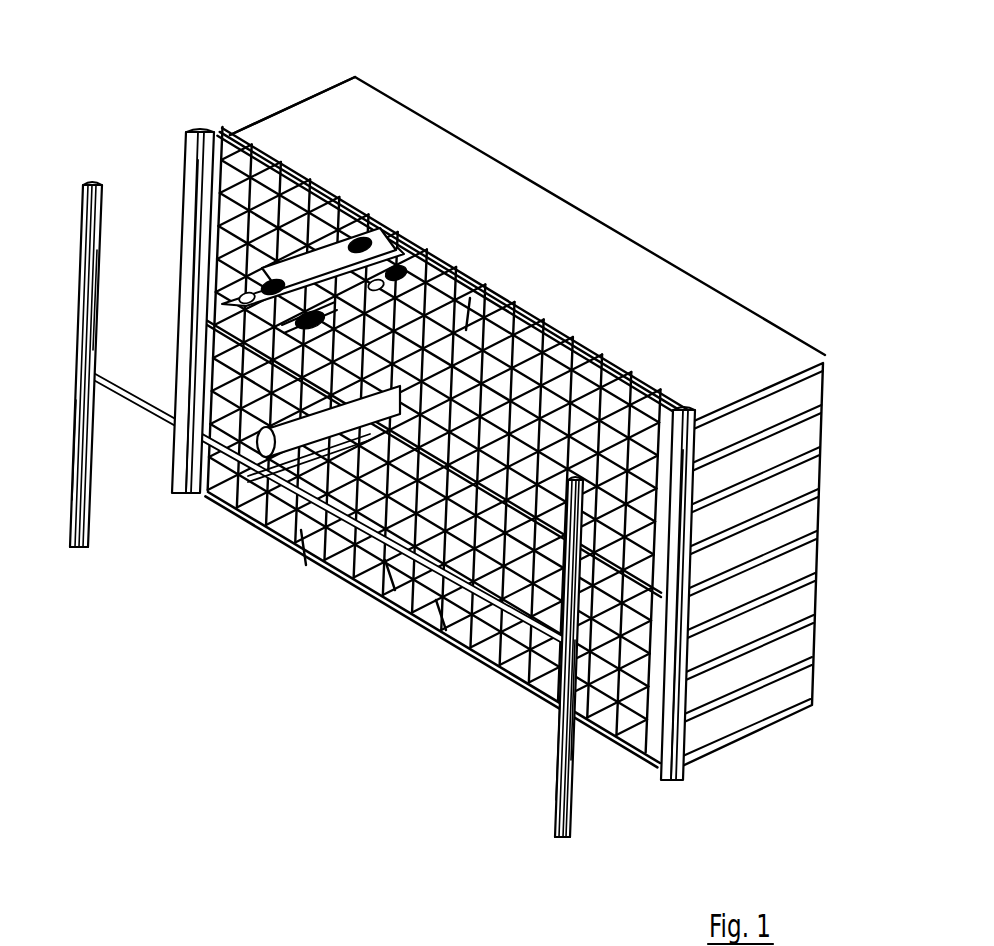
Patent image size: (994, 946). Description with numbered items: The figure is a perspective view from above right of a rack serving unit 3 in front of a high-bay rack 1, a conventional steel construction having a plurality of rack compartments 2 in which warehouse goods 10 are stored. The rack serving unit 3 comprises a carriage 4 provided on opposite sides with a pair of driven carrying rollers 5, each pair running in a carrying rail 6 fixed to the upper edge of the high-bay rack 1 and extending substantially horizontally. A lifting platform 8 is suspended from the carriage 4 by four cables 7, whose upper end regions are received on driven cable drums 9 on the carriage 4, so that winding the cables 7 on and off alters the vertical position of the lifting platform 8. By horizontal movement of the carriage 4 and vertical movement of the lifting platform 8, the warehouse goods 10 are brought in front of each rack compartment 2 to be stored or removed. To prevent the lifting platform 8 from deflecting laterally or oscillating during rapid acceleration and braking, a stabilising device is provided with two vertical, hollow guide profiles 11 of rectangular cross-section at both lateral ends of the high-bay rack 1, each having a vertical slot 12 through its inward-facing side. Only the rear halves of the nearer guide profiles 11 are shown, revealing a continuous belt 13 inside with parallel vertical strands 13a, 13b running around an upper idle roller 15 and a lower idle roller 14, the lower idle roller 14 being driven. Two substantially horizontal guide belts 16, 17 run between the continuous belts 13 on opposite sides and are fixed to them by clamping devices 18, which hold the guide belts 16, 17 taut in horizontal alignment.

The high-bay rack 1 is at (668, 311).
The rack compartments 2 is at (528, 338).
The rack serving unit 3 is at (196, 315).
The carriage 4 is at (373, 74).
The carrying rollers 5 is at (398, 233).
The carrying rail 6 is at (620, 395).
The cables 7 is at (470, 298).
The lifting platform 8 is at (213, 497).
The cable drums 9 is at (345, 200).
The warehouse goods 10 is at (265, 457).
The guide profiles 11 is at (196, 170).
The slot 12 is at (223, 132).
The continuous belt 13 is at (80, 247).
The strand 13a is at (75, 405).
The strand 13b is at (95, 298).
The lower idle roller 14 is at (70, 550).
The upper idle roller 15 is at (93, 185).
The guide belt 16 is at (390, 577).
The guide belt 17 is at (440, 614).
The clamping device 18 is at (84, 370).